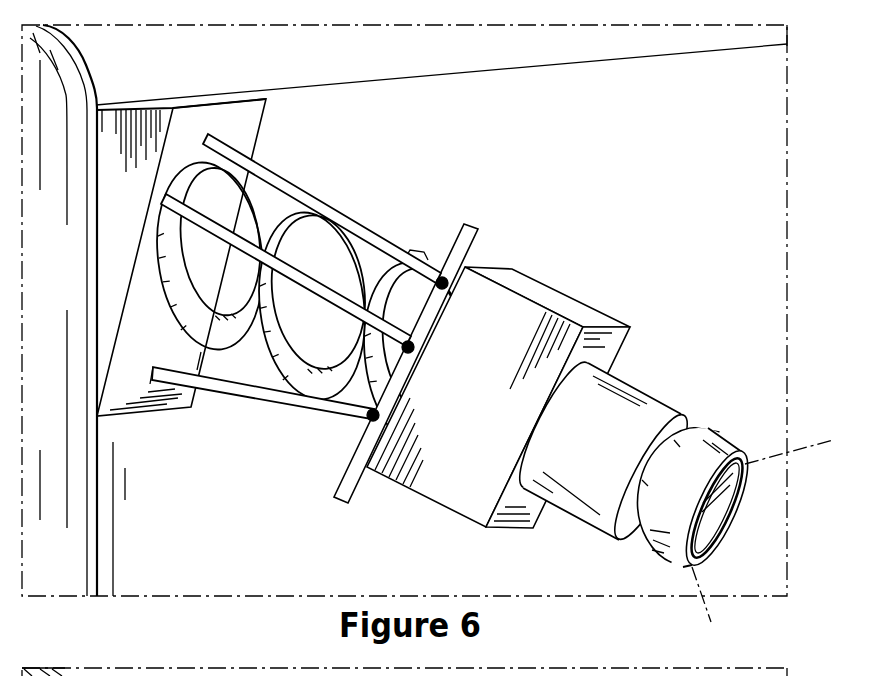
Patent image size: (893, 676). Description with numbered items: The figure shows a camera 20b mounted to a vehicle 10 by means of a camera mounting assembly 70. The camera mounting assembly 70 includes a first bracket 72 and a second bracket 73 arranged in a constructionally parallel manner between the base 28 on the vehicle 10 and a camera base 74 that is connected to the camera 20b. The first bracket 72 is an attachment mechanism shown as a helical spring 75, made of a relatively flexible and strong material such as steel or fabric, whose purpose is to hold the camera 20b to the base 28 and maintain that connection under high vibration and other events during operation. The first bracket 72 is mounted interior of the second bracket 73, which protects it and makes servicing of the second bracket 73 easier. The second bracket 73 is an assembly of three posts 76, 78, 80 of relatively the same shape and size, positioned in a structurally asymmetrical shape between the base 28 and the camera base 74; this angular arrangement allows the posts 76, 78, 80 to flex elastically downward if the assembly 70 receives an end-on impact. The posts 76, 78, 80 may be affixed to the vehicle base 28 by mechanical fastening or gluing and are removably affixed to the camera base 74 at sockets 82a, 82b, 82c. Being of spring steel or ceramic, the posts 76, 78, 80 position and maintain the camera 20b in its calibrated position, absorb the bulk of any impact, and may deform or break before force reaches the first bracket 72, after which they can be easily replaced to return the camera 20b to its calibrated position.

The vehicle 10 is at (334, 79).
The camera 20b is at (637, 365).
The base 28 is at (183, 104).
The camera mounting assembly 70 is at (372, 215).
The first bracket 72 is at (157, 313).
The second bracket 73 is at (230, 408).
The camera base 74 is at (467, 224).
The helical spring 75 is at (315, 263).
The post 76 is at (276, 399).
The post 78 is at (250, 252).
The post 80 is at (270, 167).
The socket 82a is at (358, 418).
The socket 82b is at (415, 346).
The socket 82c is at (443, 283).